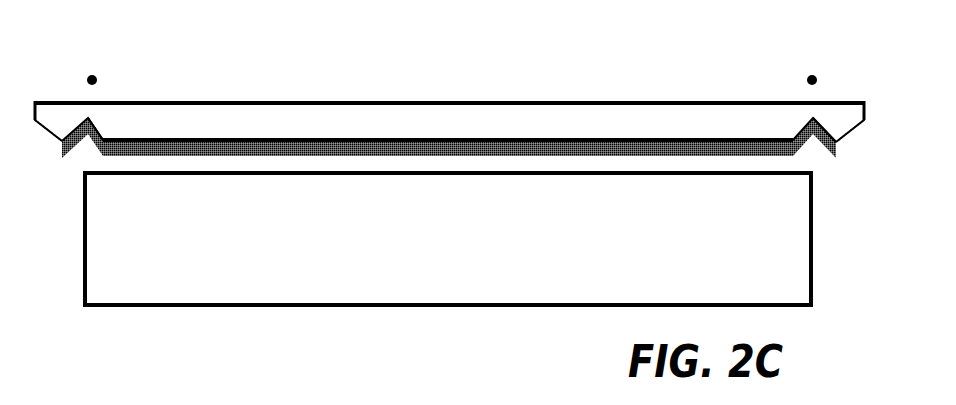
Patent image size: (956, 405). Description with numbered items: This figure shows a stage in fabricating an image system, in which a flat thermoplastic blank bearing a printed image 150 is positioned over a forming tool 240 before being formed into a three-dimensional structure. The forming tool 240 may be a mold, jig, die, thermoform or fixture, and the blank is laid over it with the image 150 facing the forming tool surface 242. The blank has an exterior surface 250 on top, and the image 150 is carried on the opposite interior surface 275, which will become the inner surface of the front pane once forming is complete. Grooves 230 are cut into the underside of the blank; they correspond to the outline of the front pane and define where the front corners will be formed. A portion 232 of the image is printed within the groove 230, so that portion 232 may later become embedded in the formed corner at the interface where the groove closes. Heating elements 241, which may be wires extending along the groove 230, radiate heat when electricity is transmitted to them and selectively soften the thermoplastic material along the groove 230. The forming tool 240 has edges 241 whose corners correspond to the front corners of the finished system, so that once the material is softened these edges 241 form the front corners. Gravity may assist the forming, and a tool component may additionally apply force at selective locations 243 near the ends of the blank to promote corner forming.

The printed image 150 is at (488, 146).
The groove 230 is at (95, 128).
The portion of the image 232 is at (103, 130).
The forming tool 240 is at (672, 254).
The heating element 241 is at (100, 71).
The forming tool surface 242 is at (637, 163).
The selective locations 243 is at (52, 100).
The exterior surface of the front pane 250 is at (373, 100).
The interior surface of the front pane 275 is at (400, 137).